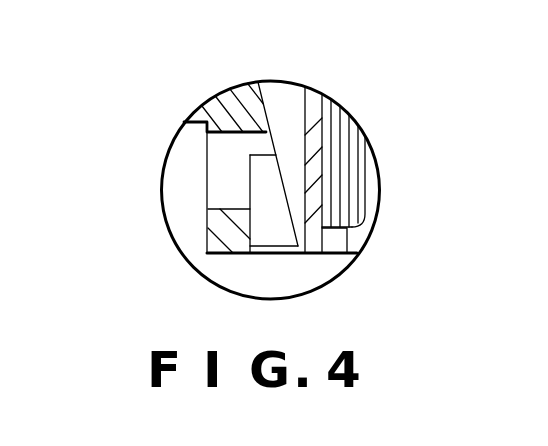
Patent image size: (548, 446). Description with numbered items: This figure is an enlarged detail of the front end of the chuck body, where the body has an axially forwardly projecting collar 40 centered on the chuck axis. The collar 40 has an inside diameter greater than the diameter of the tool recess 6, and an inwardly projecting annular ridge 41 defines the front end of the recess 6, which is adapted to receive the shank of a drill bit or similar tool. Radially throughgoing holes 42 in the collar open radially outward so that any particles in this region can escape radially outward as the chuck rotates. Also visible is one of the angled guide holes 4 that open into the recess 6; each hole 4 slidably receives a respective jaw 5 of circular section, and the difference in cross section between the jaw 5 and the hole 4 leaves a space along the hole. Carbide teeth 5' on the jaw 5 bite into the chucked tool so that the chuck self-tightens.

The guide passage 4 is at (263, 96).
The jaw 5 is at (290, 126).
The carbide teeth 5' is at (388, 176).
The recess 6 is at (374, 182).
The collar 40 is at (232, 230).
The annular ridge 41 is at (262, 148).
The radially throughgoing hole 42 is at (220, 190).